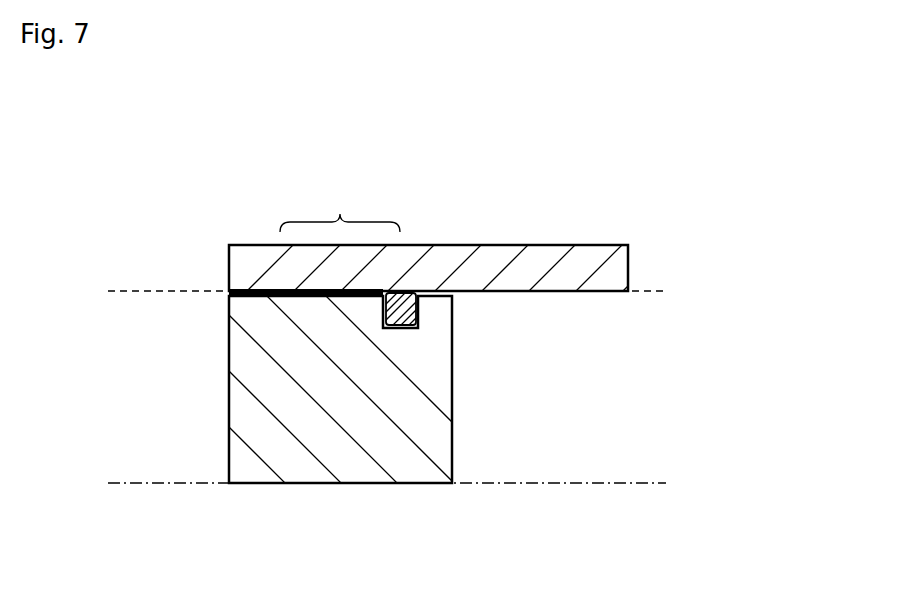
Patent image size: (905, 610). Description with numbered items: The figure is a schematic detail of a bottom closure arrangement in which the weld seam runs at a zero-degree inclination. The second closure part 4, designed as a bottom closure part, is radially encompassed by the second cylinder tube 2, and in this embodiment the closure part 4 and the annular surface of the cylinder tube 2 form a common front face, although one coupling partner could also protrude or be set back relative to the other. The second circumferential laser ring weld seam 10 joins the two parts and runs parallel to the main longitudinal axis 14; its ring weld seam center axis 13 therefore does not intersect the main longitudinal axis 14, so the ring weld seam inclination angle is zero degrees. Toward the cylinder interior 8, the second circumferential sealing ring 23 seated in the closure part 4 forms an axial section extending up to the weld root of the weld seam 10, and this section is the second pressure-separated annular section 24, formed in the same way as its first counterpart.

The second cylinder tube 2 is at (572, 278).
The second closure part 4 is at (285, 468).
The cylinder interior 8 is at (598, 369).
The second circumferential laser ring weld seam 10 is at (250, 291).
The ring weld seam center axis 13 is at (147, 291).
The main longitudinal axis 14 is at (483, 483).
The second circumferential sealing ring 23 is at (392, 328).
The second pressure-separated annular section 24 is at (340, 202).